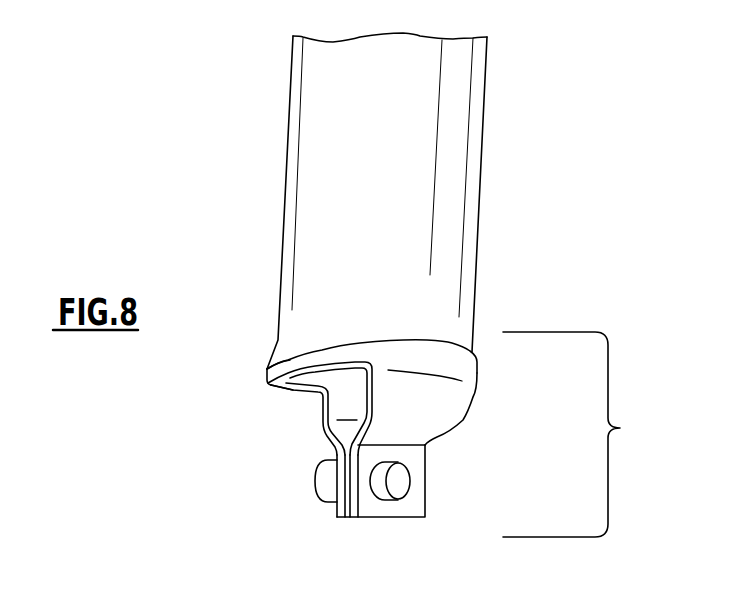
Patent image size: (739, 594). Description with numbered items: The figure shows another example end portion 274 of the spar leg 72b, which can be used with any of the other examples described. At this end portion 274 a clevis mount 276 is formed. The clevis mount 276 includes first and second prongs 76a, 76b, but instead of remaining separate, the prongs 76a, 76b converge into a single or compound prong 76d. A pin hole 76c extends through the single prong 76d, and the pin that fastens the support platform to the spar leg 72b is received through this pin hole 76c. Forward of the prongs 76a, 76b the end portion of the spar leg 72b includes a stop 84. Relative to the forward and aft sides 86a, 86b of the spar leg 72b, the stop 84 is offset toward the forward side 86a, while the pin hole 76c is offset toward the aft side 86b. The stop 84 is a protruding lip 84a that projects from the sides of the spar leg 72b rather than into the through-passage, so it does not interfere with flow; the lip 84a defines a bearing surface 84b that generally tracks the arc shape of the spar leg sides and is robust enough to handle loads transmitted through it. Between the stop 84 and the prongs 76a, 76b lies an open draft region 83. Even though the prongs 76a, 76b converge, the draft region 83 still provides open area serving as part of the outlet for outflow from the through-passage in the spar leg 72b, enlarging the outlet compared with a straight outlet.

The spar leg 72b is at (497, 178).
The forward side 86a is at (283, 250).
The aft side 86b is at (478, 213).
The clevis mount 276 is at (497, 388).
The end portion 274 is at (620, 428).
The first prong 76a is at (425, 418).
The second prong 76b is at (323, 428).
The pin hole 76c is at (402, 482).
The single prong 76d is at (360, 483).
The draft region 83 is at (340, 385).
The stop 84 is at (250, 383).
The protruding lip 84a is at (290, 364).
The bearing surface 84b is at (293, 393).